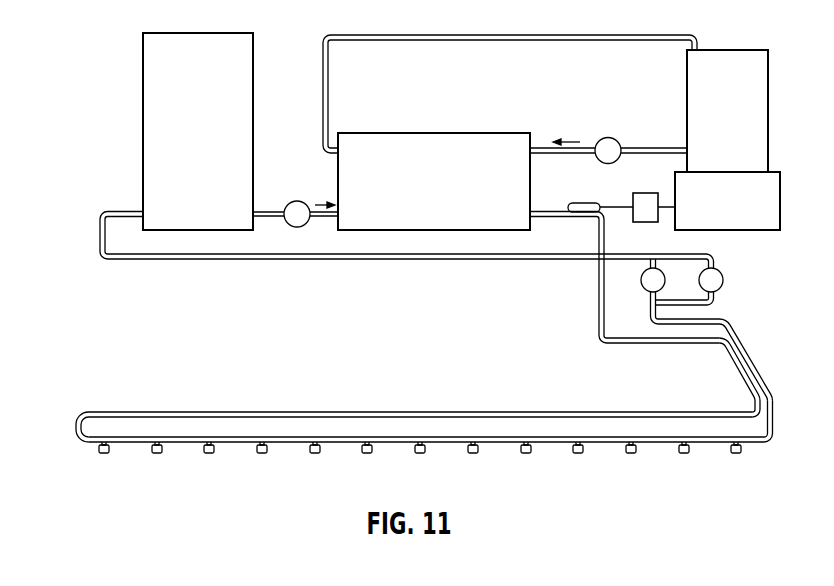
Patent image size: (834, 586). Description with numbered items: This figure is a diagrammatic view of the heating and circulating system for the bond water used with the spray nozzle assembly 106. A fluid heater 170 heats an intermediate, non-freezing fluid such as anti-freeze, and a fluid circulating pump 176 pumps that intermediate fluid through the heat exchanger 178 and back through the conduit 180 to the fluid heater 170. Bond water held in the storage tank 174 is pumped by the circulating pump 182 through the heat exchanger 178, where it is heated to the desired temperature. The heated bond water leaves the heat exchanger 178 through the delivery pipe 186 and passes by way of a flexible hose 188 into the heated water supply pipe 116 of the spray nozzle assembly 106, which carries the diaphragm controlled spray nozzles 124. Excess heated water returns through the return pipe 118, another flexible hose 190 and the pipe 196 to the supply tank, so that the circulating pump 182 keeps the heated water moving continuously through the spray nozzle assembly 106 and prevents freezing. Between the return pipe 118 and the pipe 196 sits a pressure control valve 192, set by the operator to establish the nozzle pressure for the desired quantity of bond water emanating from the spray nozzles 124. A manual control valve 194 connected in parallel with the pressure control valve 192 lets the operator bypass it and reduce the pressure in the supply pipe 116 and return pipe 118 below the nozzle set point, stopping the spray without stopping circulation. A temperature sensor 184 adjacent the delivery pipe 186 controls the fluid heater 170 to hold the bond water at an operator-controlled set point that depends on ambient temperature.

The spray nozzle assembly 106 is at (424, 431).
The heated water supply pipe 116 is at (663, 447).
The return pipe 118 is at (620, 410).
The diaphragm controlled spray nozzles 124 is at (530, 455).
The fluid heater 170 is at (769, 171).
The storage tank 174 is at (256, 79).
The fluid circulating pump 176 is at (607, 136).
The heat exchanger 178 is at (485, 133).
The conduit 180 is at (445, 42).
The circulating pump 182 is at (292, 200).
The temperature sensor 184 is at (583, 201).
The delivery pipe 186 is at (597, 324).
The flexible hose 188 is at (732, 353).
The flexible hose 190 is at (750, 339).
The pressure control valve 192 is at (642, 284).
The manual control valve 194 is at (724, 283).
The pipe 196 is at (391, 260).